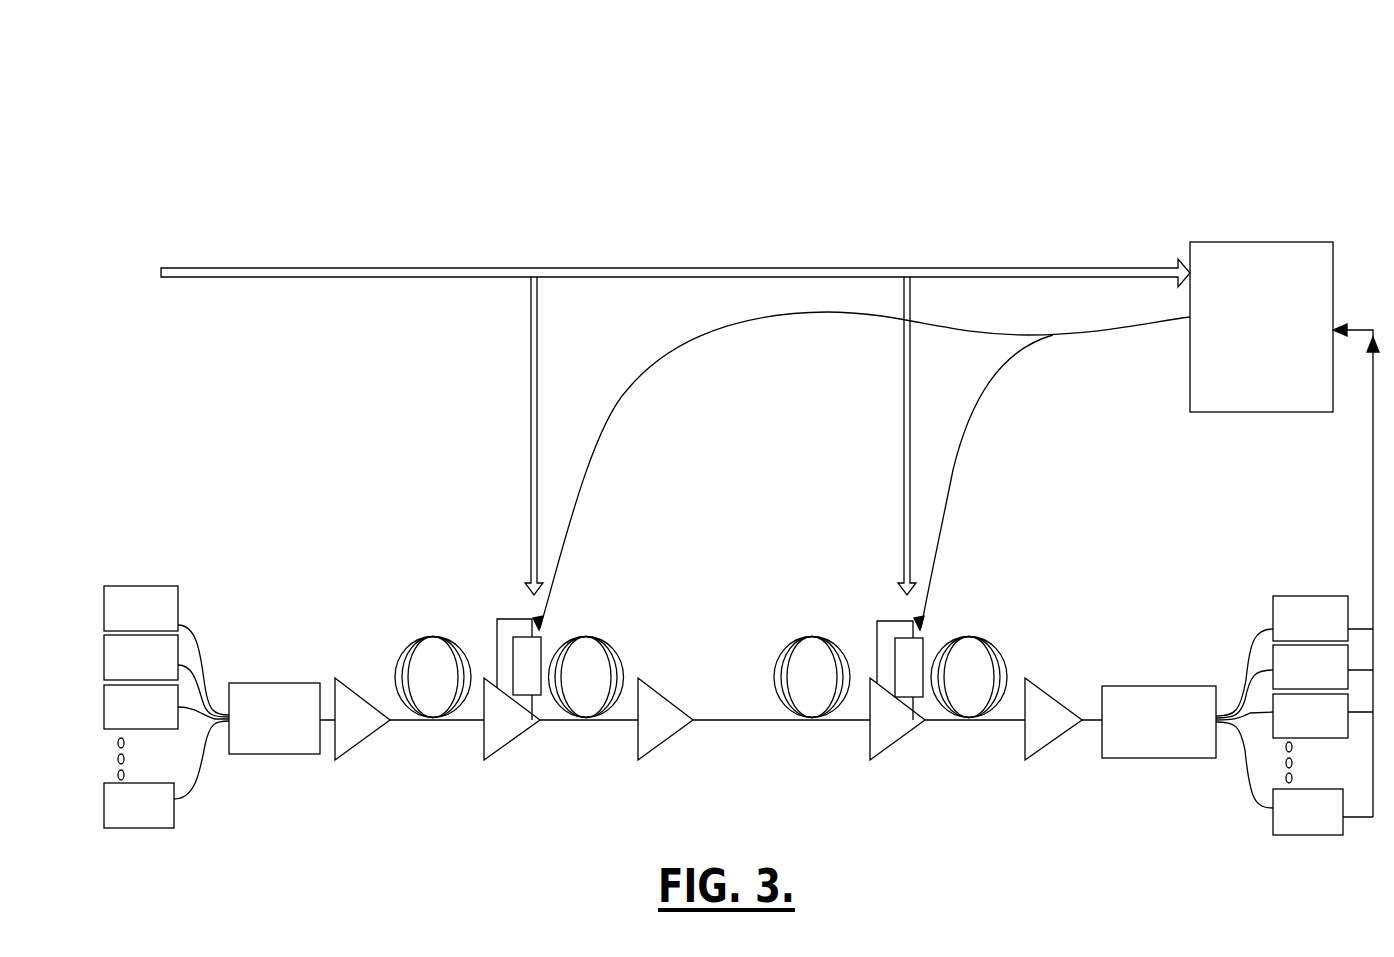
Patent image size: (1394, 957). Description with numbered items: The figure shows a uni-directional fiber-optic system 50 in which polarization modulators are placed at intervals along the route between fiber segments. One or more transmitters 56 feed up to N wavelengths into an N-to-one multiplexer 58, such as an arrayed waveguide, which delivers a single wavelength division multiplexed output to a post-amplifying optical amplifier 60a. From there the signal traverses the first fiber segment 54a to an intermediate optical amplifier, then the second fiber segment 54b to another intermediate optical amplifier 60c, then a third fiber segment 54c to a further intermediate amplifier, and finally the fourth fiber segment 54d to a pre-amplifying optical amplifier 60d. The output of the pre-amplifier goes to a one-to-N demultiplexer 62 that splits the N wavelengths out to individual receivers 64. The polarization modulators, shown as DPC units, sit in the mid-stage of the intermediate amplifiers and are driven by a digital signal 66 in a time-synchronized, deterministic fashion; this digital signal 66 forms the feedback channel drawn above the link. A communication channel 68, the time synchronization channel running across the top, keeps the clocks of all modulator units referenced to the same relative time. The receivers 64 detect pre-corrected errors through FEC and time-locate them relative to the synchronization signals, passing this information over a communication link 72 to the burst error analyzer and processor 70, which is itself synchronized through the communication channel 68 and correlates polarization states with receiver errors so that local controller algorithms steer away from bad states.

The fiber-optic system 50 is at (1067, 83).
The first fiber segment 54a is at (433, 636).
The second fiber segment 54b is at (586, 636).
The third fiber segment 54c is at (812, 636).
The fourth fiber segment 54d is at (969, 636).
The transmitters 56 is at (140, 584).
The N:1 multiplexer 58 is at (268, 683).
The optical amplifier 60a is at (352, 748).
The intermediate optical amplifier 60c is at (656, 687).
The optical amplifier 60d is at (1041, 687).
The 1:N demultiplexer 62 is at (1145, 686).
The receivers 64 is at (1277, 595).
The digital signal 66 is at (628, 388).
The communication channel 68 is at (795, 230).
The burst error analyzer and processor 70 is at (1268, 242).
The communication link 72 is at (1372, 463).